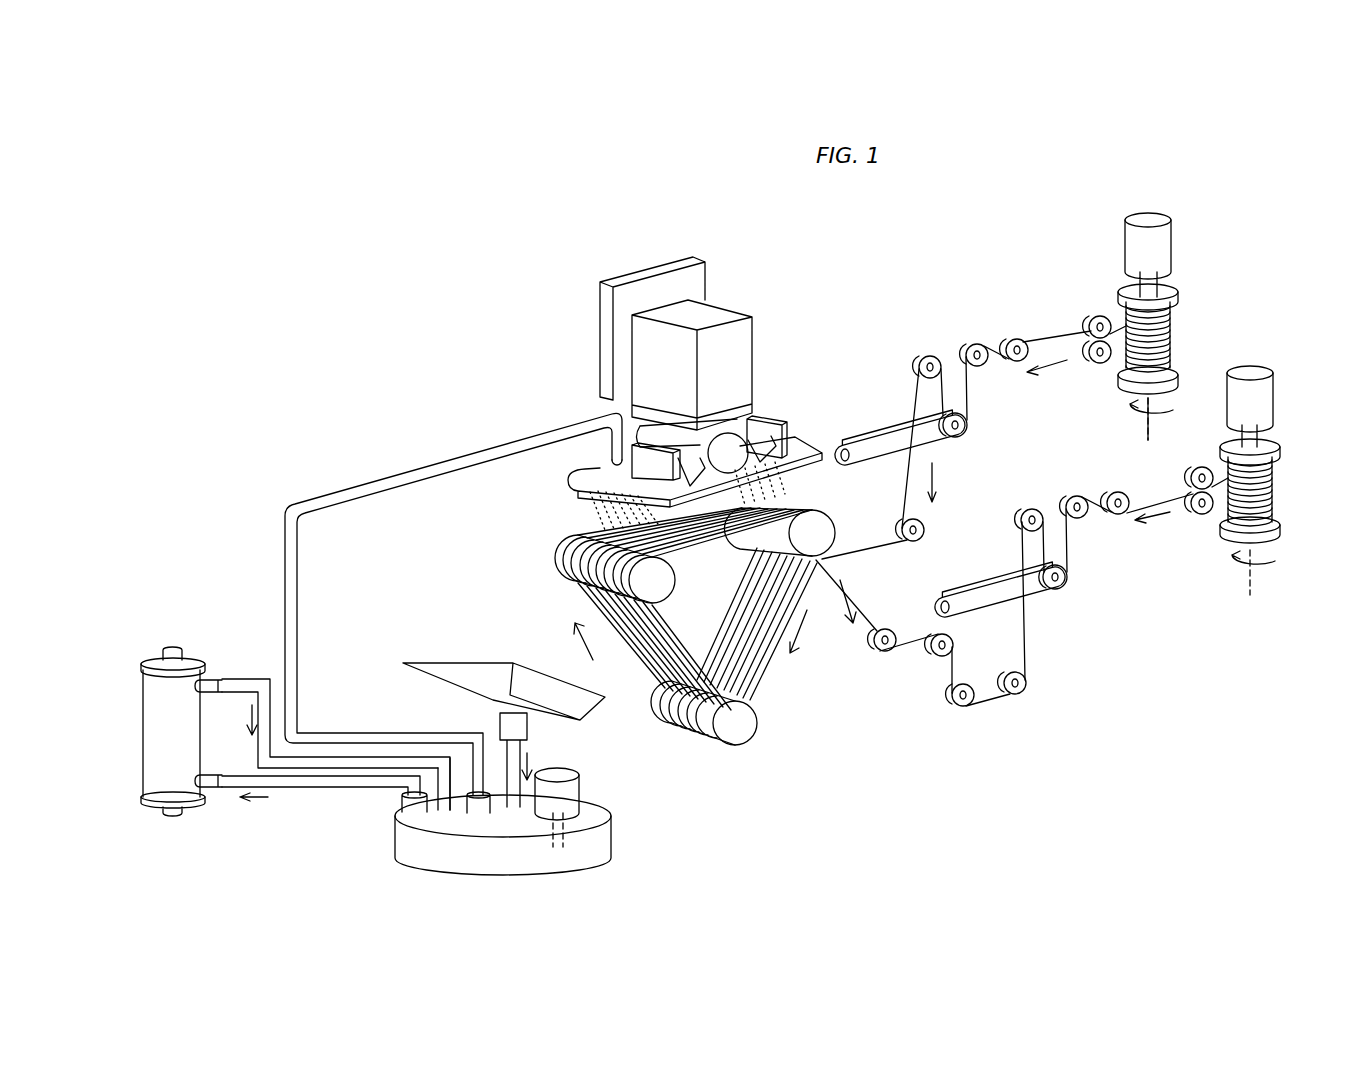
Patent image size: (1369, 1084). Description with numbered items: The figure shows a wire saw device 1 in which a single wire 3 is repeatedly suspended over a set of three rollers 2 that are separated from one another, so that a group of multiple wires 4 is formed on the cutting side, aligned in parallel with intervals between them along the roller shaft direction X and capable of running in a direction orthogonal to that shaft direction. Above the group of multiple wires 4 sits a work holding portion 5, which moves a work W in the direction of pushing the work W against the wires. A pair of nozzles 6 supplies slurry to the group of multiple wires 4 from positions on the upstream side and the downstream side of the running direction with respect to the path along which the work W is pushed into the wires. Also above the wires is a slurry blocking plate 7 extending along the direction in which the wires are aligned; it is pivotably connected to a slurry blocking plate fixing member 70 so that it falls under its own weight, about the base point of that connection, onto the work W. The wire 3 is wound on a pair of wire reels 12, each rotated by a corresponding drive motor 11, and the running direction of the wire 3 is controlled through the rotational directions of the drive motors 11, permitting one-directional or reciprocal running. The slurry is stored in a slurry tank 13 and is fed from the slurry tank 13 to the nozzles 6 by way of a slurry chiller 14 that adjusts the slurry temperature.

The wire saw device 1 is at (527, 293).
The roller 2 is at (637, 580).
The wire 3 is at (568, 600).
The group of multiple wires 4 is at (632, 660).
The work holding portion 5 is at (748, 340).
The nozzle 6 is at (580, 492).
The slurry blocking plate 7 is at (760, 453).
The slurry blocking plate fixing member 70 is at (760, 432).
The drive motor 11 is at (1135, 242).
The wire reel 12 is at (1173, 305).
The slurry tank 13 is at (600, 812).
The slurry chiller 14 is at (157, 705).
The work W is at (602, 442).
The roller shaft direction X is at (645, 578).